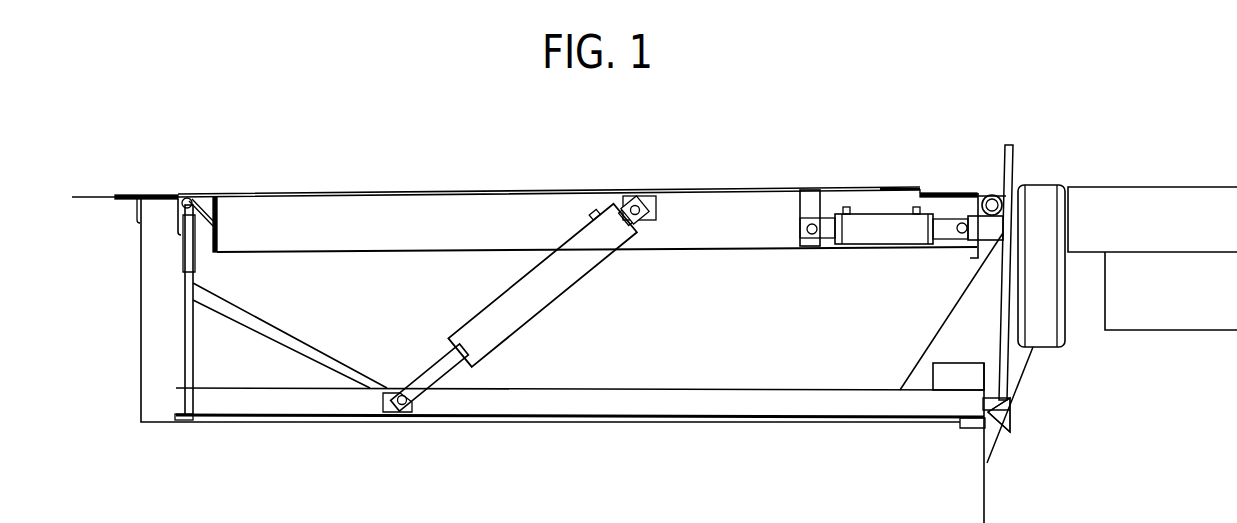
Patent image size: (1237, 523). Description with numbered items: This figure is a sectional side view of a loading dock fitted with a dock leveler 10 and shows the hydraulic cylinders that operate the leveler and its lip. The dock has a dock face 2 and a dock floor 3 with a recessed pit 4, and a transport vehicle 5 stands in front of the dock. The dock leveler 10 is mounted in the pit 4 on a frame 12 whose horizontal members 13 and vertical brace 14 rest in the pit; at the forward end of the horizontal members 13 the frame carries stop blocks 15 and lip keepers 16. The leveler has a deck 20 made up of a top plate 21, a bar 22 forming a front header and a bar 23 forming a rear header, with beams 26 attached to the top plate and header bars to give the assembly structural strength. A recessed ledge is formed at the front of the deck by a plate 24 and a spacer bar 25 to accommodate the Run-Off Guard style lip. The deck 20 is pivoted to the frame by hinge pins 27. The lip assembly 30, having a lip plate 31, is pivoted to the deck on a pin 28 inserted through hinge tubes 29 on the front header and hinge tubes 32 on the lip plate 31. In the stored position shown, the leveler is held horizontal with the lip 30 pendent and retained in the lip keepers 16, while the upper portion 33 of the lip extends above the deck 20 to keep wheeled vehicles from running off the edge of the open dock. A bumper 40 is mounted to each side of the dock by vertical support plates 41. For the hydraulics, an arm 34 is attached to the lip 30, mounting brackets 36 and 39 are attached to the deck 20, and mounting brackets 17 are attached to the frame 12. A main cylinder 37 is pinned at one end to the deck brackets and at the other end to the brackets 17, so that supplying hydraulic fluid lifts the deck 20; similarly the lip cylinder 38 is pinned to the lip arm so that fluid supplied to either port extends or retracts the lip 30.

The dock face 2 is at (987, 480).
The dock floor 3 is at (95, 196).
The recessed pit 4 is at (243, 423).
The transport vehicle 5 is at (1127, 186).
The dock leveler 10 is at (549, 156).
The deck 20 is at (549, 156).
The top plate 21 is at (258, 194).
The frame 12 is at (579, 379).
The horizontal members 13 is at (597, 389).
The vertical brace 14 is at (193, 353).
The stop blocks 15 is at (933, 378).
The lip keepers 16 is at (1012, 412).
The mounting brackets 17 is at (378, 403).
The front header bar 22 is at (988, 197).
The rear header bar 23 is at (218, 236).
The plate 24 is at (948, 193).
The spacer bar 25 is at (925, 192).
The beams 26 is at (353, 254).
The hinge pins 27 is at (190, 197).
The pin 28 is at (1012, 190).
The hinge tubes 29 is at (1074, 225).
The hinge tubes 32 is at (1005, 203).
The lip assembly 30 is at (1068, 405).
The lip plate 31 is at (1003, 378).
The upper portion 33 is at (1000, 203).
The arm 34 is at (988, 243).
The mounting brackets 36 is at (797, 202).
The main cylinder 37 is at (563, 296).
The lip cylinder 38 is at (873, 246).
The mounting brackets 39 is at (657, 199).
The bumper 40 is at (1067, 345).
The vertical support plates 41 is at (928, 343).